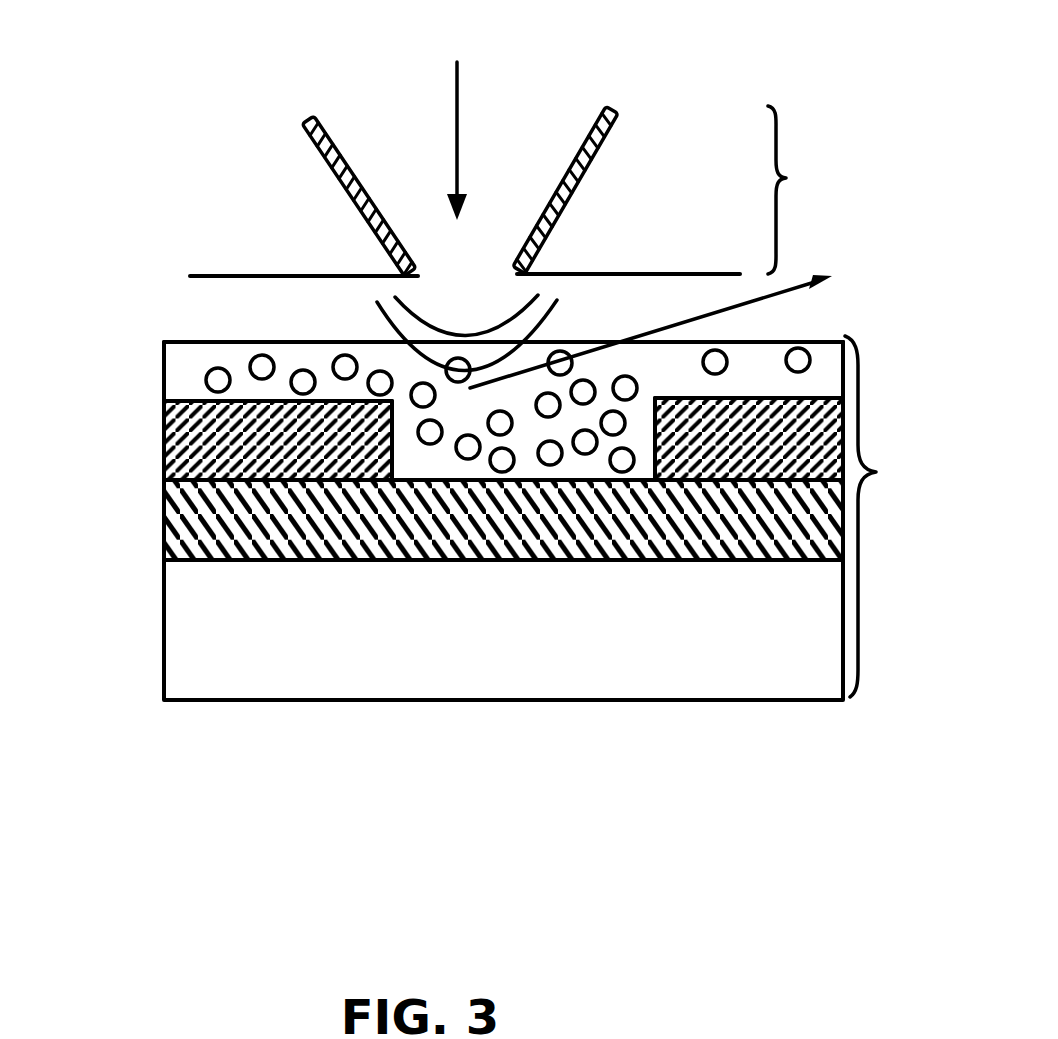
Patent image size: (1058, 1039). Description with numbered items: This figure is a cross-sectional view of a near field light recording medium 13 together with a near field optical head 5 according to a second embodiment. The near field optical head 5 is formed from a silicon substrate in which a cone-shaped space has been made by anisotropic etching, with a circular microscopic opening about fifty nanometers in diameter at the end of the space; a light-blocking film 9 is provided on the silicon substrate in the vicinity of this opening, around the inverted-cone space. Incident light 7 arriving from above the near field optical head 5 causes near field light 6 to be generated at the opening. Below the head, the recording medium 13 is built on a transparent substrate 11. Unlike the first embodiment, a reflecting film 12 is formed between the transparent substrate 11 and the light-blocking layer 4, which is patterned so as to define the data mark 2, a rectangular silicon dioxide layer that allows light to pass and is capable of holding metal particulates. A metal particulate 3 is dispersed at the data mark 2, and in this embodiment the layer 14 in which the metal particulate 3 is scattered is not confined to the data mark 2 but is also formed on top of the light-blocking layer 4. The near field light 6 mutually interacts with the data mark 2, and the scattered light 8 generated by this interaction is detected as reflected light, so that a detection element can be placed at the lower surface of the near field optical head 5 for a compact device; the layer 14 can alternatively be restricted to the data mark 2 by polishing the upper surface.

The data mark 2 is at (441, 458).
The metal particulate 3 is at (622, 462).
The light-blocking layer 4 is at (232, 454).
The near field optical head 5 is at (509, 191).
The near field light 6 is at (390, 342).
The incident light 7 is at (455, 118).
The scattered light 8 is at (622, 315).
The light-blocking film 9 is at (308, 120).
The transparent substrate 11 is at (200, 629).
The reflecting film 12 is at (740, 560).
The near field light recording medium 13 is at (884, 516).
The layer where the metal particulate is scattered 14 is at (762, 360).